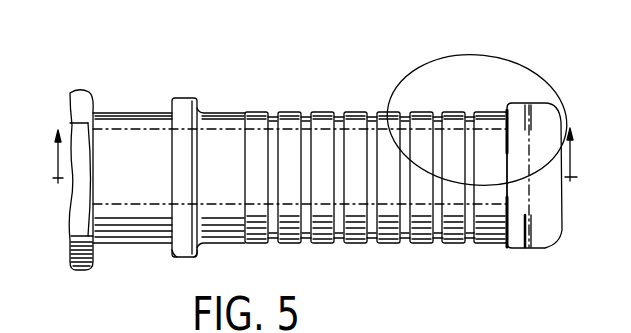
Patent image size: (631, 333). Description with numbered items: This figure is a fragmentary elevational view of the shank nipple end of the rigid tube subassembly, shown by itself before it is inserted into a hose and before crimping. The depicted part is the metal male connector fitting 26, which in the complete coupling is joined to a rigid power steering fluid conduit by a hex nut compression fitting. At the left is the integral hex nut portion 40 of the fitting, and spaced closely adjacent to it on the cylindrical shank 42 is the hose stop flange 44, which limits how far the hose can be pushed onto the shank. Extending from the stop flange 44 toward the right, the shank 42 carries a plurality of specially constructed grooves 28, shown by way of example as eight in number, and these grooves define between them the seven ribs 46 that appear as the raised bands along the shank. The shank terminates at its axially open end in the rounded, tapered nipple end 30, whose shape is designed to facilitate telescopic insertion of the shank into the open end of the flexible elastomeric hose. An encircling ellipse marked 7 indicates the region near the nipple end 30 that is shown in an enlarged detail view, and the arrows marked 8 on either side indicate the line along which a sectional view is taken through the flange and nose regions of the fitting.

The male connector fitting 26 is at (146, 66).
The grooves 28 is at (338, 113).
The nipple end 30 is at (542, 244).
The hex nut portion 40 is at (72, 90).
The shank 42 is at (207, 108).
The hose stop flange 44 is at (177, 258).
The ribs 46 is at (295, 245).
The detail circle (FIG. 7) 7 is at (430, 67).
The section line 8- 8 is at (312, 155).